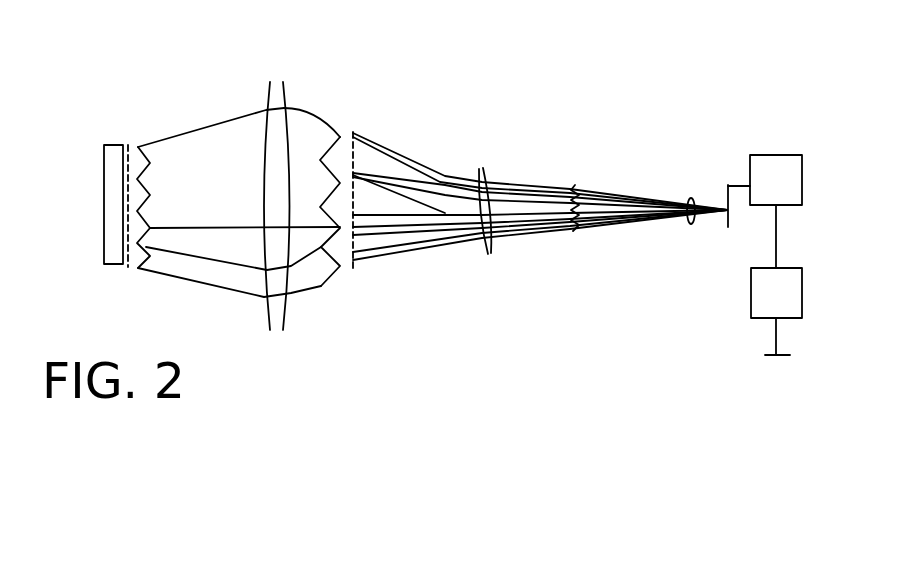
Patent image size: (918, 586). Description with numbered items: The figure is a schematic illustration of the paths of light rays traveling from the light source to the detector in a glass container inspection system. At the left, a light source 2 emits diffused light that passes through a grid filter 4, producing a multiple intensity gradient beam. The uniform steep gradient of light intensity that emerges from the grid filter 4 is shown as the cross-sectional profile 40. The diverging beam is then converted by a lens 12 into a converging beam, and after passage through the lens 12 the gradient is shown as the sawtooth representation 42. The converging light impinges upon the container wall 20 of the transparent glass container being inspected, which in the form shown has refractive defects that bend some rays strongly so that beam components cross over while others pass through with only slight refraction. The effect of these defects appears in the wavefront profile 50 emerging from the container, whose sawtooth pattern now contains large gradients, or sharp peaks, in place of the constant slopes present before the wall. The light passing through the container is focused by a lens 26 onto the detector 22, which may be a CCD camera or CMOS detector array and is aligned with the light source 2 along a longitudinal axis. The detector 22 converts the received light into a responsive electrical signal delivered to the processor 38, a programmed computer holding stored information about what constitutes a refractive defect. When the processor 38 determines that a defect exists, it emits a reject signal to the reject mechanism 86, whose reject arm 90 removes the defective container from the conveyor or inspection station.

The light source 2 is at (104, 167).
The grid filter 4 is at (128, 147).
The gradient 40 is at (143, 193).
The lens 12 is at (283, 82).
The sawtooth representation 42 is at (340, 132).
The container wall 20 is at (481, 167).
The wavefront profile 50 is at (577, 186).
The lens 26 is at (693, 198).
The detector 22 is at (731, 212).
The processor 38 is at (759, 194).
The reject mechanism 86 is at (759, 307).
The reject arm 90 is at (775, 338).